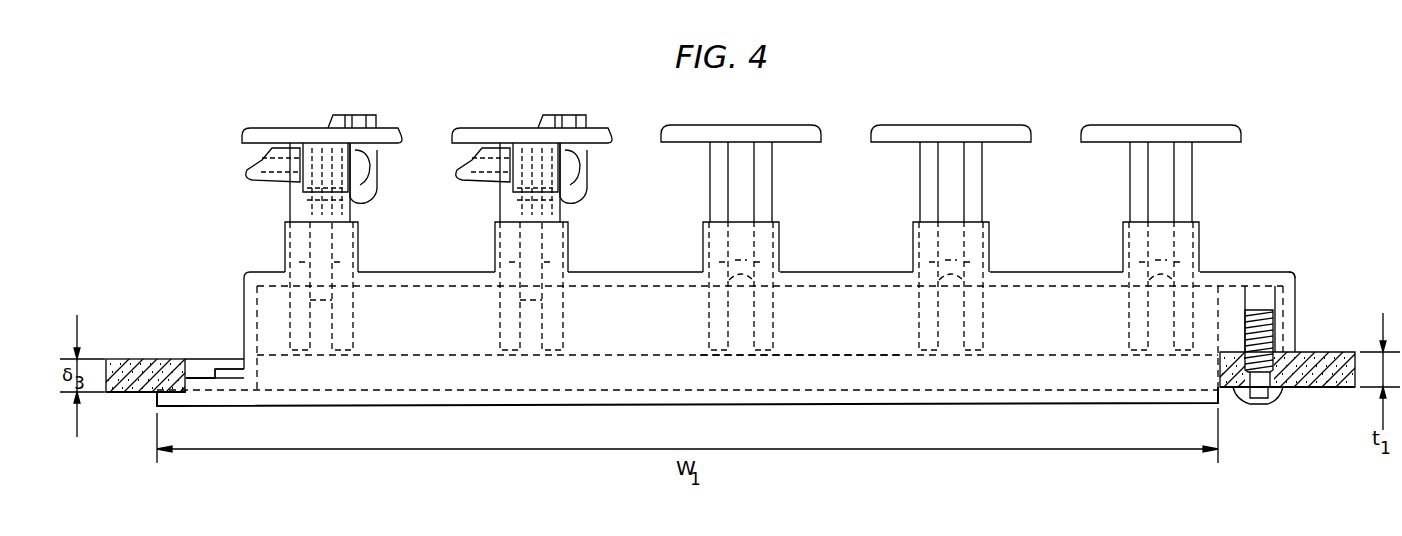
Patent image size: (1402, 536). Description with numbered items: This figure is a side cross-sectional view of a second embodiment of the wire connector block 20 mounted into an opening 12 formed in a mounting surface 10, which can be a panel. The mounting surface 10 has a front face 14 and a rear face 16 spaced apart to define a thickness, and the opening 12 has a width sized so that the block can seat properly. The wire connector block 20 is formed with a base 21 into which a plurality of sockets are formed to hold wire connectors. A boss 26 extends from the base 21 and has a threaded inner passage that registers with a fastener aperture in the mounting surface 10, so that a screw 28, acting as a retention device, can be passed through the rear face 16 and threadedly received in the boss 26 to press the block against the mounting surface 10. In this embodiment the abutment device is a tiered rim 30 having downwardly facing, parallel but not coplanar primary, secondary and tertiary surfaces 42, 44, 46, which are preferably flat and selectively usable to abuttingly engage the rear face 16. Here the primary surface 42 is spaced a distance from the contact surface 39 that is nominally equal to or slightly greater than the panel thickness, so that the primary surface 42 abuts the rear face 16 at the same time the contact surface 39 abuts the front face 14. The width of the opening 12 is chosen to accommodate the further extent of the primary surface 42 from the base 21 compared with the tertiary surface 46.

The mounting surface 10 is at (1311, 353).
The opening 12 is at (810, 366).
The front face 14 is at (157, 358).
The rear face 16 is at (124, 394).
The wire connector block 20 is at (1272, 271).
The base 21 is at (603, 300).
The boss 26 is at (1297, 272).
The screw 28 is at (1277, 408).
The tiered rim 30 is at (203, 385).
The contact surface 39 is at (1286, 353).
The primary surface 42 is at (152, 408).
The secondary surface 44 is at (193, 378).
The tertiary surface 46 is at (222, 368).